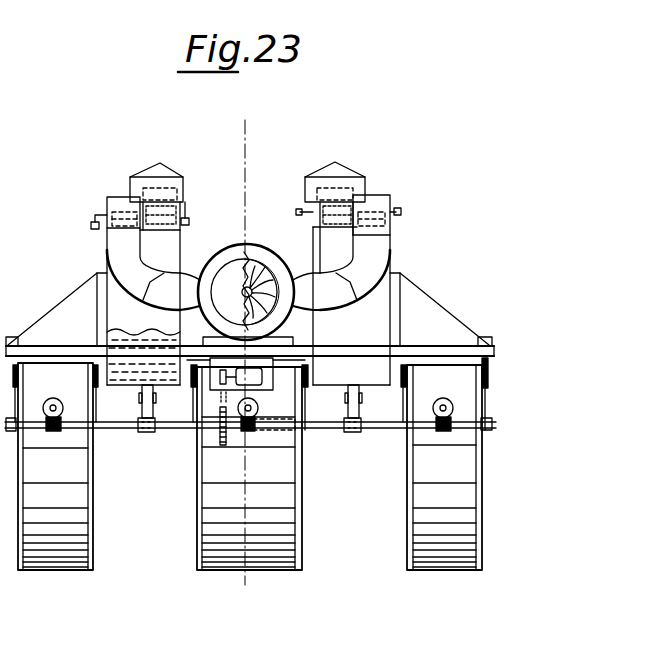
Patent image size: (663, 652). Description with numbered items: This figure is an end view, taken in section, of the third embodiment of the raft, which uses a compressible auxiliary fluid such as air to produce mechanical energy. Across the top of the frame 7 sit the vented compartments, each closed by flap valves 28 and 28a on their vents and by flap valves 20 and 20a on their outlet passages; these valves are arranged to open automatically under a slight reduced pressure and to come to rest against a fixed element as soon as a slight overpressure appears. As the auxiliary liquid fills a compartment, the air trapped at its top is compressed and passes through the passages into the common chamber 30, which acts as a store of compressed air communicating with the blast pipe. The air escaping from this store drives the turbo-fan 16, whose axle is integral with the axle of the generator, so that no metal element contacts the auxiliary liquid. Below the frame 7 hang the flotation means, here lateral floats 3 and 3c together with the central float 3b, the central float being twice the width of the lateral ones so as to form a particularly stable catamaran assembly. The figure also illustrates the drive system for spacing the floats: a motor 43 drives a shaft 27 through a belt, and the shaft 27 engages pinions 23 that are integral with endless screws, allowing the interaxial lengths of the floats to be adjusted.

The float 3 is at (48, 571).
The central float 3b is at (233, 572).
The float 3c is at (451, 572).
The frame 7 is at (455, 341).
The turbo-fan 16 is at (250, 289).
The flap valve 20 is at (124, 229).
The flap valve 20a is at (388, 247).
The pinion 23 is at (55, 398).
The shaft 27 is at (110, 433).
The flap valve 28 is at (182, 210).
The flap valve 28a is at (338, 205).
The chamber 30 is at (215, 262).
The motor 43 is at (252, 379).